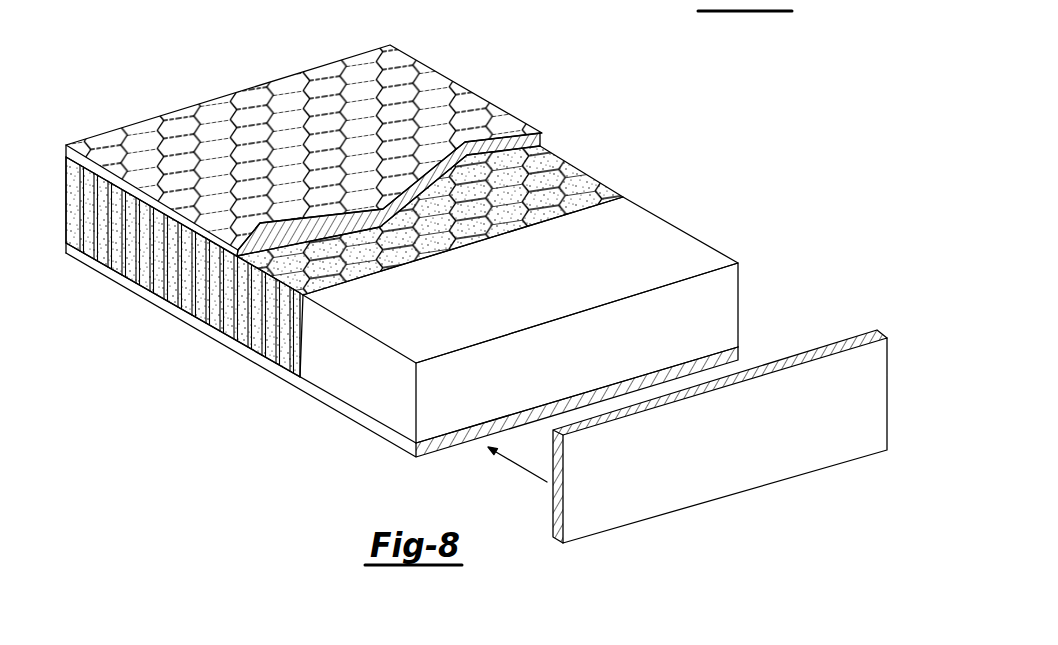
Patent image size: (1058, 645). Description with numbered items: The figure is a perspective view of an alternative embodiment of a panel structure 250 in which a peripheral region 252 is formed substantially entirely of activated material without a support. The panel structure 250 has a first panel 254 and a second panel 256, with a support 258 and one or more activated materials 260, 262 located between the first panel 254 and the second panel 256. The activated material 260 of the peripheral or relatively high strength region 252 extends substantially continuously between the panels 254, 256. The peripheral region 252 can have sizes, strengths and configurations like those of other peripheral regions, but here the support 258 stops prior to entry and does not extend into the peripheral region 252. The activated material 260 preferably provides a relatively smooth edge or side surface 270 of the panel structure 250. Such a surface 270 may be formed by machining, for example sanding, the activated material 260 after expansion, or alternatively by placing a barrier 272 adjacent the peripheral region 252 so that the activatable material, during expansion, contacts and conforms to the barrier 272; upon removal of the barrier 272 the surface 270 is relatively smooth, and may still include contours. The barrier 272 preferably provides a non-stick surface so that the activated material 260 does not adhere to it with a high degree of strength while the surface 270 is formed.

The panel structure 250 is at (213, 68).
The peripheral region 252 is at (635, 241).
The first panel 254 is at (433, 70).
The second panel 256 is at (300, 382).
The support 258 is at (132, 253).
The activated material 260 is at (696, 311).
The activated material 262 is at (183, 288).
The side surface 270 is at (467, 411).
The barrier 272 is at (663, 493).